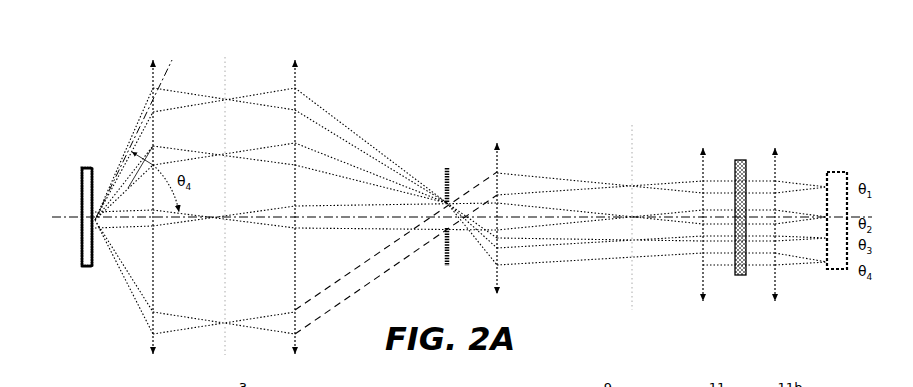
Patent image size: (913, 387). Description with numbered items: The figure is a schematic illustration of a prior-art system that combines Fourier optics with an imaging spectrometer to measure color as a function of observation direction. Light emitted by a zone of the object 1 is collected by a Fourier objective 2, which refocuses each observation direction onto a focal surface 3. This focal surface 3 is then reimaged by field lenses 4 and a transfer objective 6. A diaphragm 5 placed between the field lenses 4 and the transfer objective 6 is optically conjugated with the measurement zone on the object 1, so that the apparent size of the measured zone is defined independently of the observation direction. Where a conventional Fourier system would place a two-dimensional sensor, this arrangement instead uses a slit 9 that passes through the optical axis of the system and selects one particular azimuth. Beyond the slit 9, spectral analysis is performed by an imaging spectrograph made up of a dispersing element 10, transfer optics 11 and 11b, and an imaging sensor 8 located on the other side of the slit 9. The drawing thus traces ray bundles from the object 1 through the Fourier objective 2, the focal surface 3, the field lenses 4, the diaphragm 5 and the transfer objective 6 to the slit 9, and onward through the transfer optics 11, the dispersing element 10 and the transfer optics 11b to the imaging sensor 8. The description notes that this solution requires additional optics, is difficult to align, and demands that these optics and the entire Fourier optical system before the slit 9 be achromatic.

The object 1 is at (85, 166).
The Fourier objective 2 is at (151, 84).
The focal surface 3 is at (232, 92).
The field lenses 4 is at (299, 83).
The diaphragm 5 is at (443, 178).
The transfer objective 6 is at (501, 155).
The imaging sensor 8 is at (838, 170).
The slit 9 is at (629, 127).
The dispersing element 10 is at (745, 157).
The transfer optics 11 is at (706, 140).
The transfer optics 11b is at (777, 140).